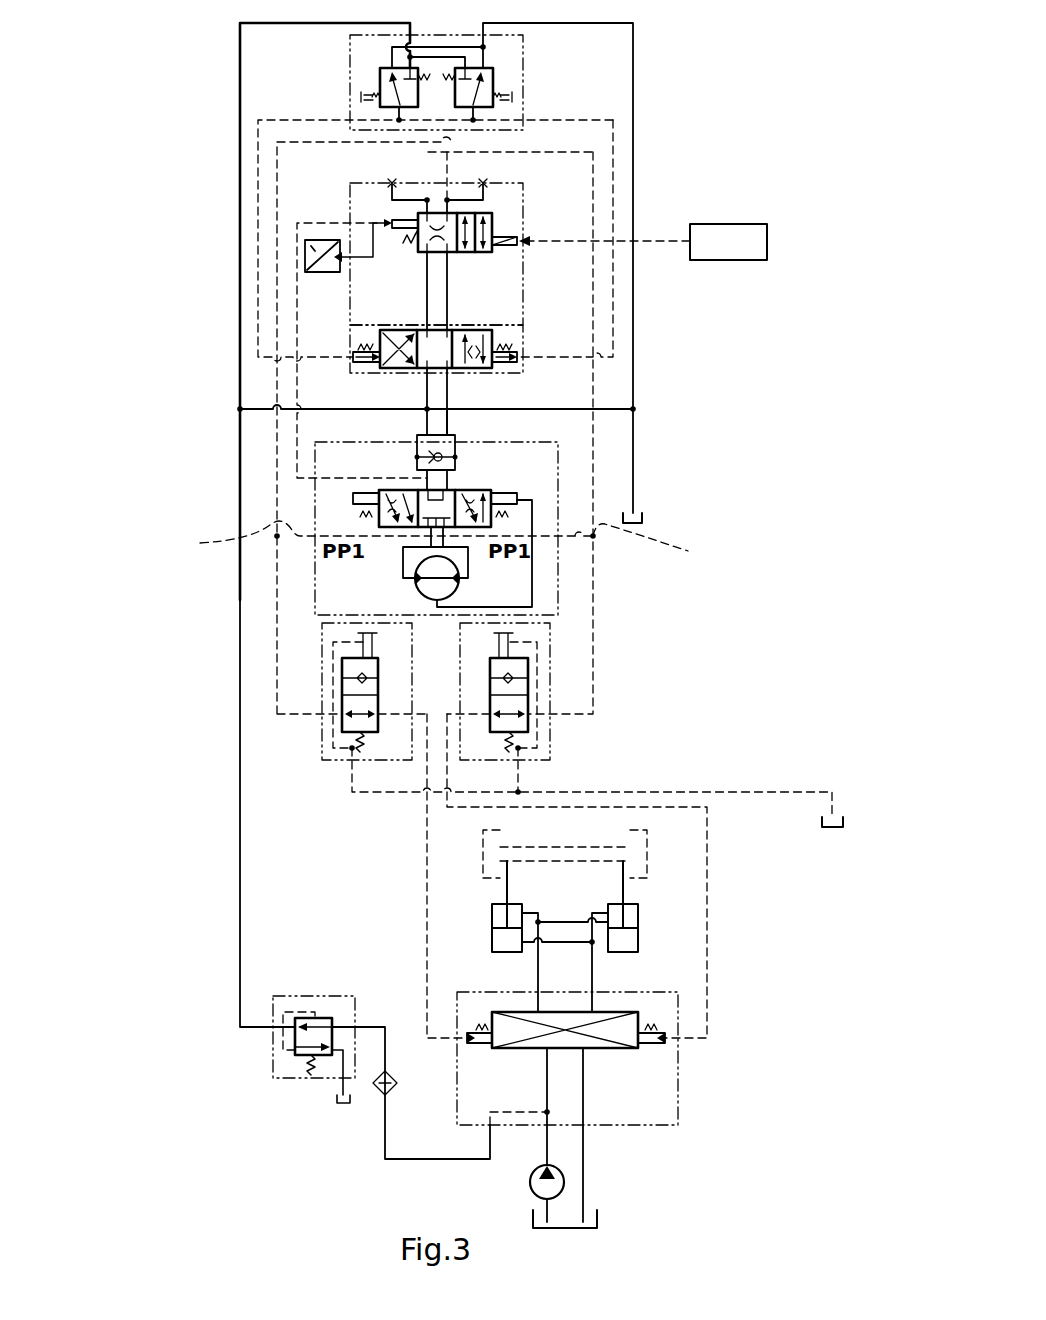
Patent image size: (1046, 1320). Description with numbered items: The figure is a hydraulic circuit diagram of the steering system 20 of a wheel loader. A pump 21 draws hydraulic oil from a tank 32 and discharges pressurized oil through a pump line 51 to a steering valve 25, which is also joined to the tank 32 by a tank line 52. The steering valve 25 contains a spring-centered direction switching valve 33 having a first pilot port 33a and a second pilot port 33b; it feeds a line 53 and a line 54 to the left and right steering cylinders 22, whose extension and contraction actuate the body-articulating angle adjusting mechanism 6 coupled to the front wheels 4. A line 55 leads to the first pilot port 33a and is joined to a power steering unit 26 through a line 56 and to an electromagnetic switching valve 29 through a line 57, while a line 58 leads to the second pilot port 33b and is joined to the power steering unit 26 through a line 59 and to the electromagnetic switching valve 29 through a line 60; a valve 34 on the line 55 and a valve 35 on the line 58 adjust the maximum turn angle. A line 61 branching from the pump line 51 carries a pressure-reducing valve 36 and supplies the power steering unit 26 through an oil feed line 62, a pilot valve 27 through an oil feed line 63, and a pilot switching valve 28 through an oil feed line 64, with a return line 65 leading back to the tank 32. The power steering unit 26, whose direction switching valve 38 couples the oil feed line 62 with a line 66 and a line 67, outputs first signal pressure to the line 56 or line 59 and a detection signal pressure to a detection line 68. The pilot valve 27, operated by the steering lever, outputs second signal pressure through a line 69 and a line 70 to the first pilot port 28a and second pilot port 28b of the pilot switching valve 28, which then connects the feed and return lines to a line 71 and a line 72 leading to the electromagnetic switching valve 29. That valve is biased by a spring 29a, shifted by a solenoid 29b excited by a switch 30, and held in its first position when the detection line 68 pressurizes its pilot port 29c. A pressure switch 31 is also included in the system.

The hydraulic steering system 20 is at (700, 24).
The pump 21 is at (531, 1180).
The steering cylinders 22 is at (494, 910).
The steering valve 25 is at (678, 1118).
The power steering unit 26 is at (315, 582).
The pilot valve 27 is at (523, 76).
The pilot switching valve 28 is at (345, 366).
The first pilot port 28a is at (362, 370).
The second pilot port 28b is at (505, 370).
The electromagnetic switching valve 29 is at (354, 202).
The spring 29a is at (405, 242).
The solenoid 29b is at (517, 248).
The pilot port 29c is at (392, 222).
The switch 30 is at (768, 232).
The pressure switch 31 is at (307, 257).
The tank 32 is at (642, 520).
The direction switching valve 33 is at (571, 1056).
The first pilot port 33a is at (487, 1050).
The second pilot port 33b is at (650, 1050).
The valve 34 is at (342, 668).
The valve 35 is at (528, 668).
The pressure-reducing valve 36 is at (283, 1080).
The direction switching valve 38 is at (353, 500).
The front wheels 4 is at (484, 845).
The body-articulating angle adjusting mechanism 6 is at (563, 847).
The pump line 51 is at (546, 1144).
The tank line 52 is at (583, 1140).
The line 53 is at (538, 988).
The line 54 is at (592, 988).
The line 55 is at (427, 966).
The line 56 is at (372, 537).
The line 57 is at (277, 490).
The line 58 is at (707, 966).
The line 59 is at (647, 543).
The line 60 is at (593, 465).
The line 61 is at (240, 806).
The oil feed line 62 is at (424, 417).
The oil feed line 63 is at (238, 333).
The oil feed line 64 is at (420, 405).
The return line 65 is at (633, 430).
The line 66 is at (403, 562).
The line 67 is at (468, 578).
The detection line 68 is at (297, 290).
The line 69 is at (258, 176).
The line 70 is at (613, 197).
The line 71 is at (448, 312).
The line 72 is at (427, 290).